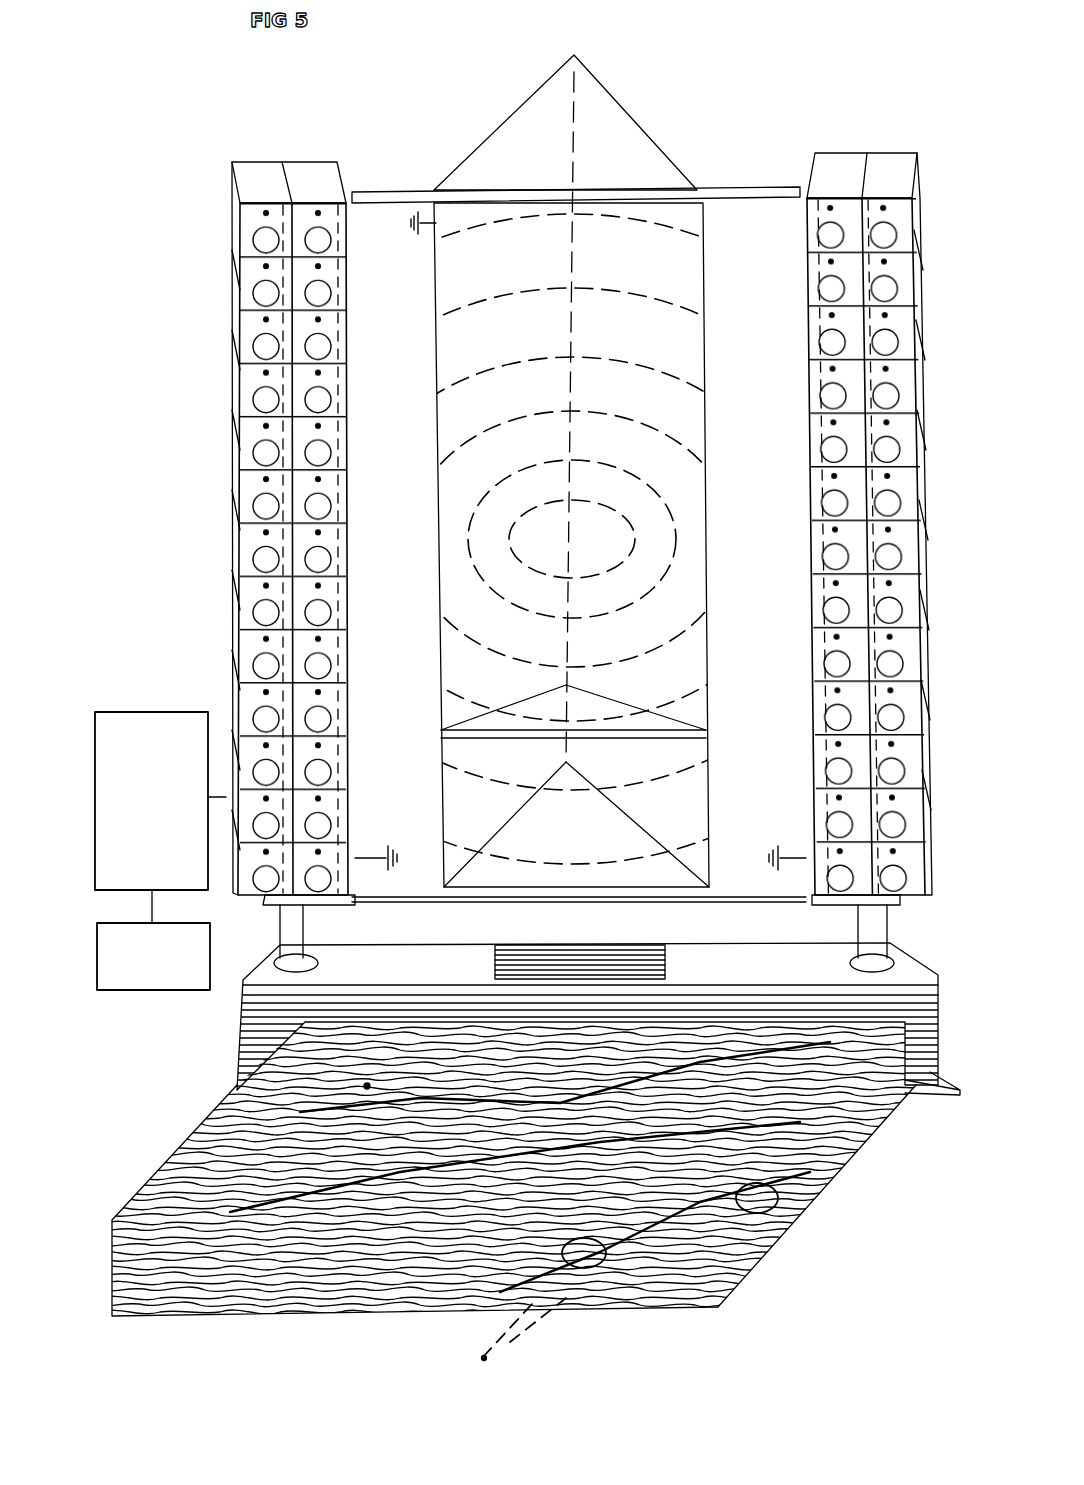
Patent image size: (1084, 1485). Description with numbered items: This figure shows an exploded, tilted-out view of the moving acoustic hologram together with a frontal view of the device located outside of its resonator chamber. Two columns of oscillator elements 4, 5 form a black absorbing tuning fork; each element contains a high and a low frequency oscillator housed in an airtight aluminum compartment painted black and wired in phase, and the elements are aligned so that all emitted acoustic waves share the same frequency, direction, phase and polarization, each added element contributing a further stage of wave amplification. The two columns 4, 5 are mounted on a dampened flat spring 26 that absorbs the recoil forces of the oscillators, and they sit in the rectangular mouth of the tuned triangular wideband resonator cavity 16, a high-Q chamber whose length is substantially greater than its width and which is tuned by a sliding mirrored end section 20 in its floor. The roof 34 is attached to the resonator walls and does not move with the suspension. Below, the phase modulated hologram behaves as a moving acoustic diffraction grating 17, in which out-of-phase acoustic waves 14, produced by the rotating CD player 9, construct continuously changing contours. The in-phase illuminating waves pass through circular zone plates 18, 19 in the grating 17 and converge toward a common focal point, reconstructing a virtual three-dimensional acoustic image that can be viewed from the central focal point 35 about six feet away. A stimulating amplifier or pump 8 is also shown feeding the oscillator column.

The roof 34 is at (642, 122).
The tuned triangular wideband resonator cavity 16 is at (710, 259).
The sliding mirrored end section 20 is at (712, 737).
The column of oscillator elements 4 is at (226, 437).
The column of oscillator elements 5 is at (806, 417).
The stimulating amplifier or pump 8 is at (160, 780).
The rotating CD player 9 is at (153, 956).
The flat spring 26 is at (235, 1021).
The phase modulated out-of-phase acoustic waves 14 is at (545, 1169).
The moving acoustic diffraction grating 17 is at (364, 1086).
The circular zone plate 18 is at (757, 1199).
The circular zone plate 19 is at (584, 1254).
The central focal point 35 is at (503, 1335).